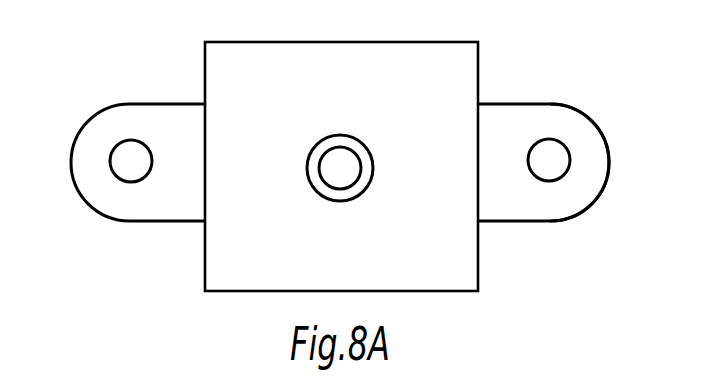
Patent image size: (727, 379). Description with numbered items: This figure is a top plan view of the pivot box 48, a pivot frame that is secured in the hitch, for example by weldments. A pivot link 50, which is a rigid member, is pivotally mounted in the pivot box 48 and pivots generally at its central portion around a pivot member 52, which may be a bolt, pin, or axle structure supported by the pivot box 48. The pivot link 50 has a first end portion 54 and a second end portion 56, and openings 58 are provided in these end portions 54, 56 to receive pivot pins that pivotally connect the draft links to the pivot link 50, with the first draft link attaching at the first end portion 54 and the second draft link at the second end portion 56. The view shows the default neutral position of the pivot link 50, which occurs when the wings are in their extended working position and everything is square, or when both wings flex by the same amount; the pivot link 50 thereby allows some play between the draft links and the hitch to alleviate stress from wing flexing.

The pivot box 48 is at (430, 42).
The pivot link 50 is at (540, 115).
The pivot member 52 is at (328, 145).
The first end portion 54 is at (587, 141).
The second end portion 56 is at (147, 122).
The openings 58 is at (128, 153).